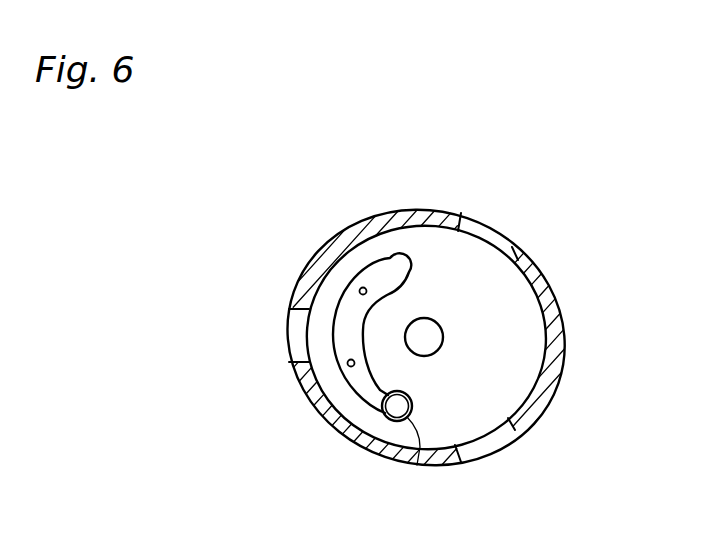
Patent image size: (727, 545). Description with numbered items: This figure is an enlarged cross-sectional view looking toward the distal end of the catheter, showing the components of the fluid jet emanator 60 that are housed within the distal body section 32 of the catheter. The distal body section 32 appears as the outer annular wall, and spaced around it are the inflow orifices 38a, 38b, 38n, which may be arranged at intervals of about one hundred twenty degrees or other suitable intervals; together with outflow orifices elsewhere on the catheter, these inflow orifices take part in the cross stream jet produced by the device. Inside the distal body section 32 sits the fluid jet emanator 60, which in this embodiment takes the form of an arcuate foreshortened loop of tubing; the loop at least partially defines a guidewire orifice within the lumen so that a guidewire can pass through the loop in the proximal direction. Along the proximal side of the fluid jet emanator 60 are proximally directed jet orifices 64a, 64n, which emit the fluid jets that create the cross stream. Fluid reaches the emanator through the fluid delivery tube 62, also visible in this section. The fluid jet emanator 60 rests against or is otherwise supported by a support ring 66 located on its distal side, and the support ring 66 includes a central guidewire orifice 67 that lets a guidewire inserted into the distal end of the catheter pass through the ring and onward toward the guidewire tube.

The distal body section 32 is at (395, 212).
The inflow orifice 38a is at (490, 233).
The inflow orifice 38b is at (497, 437).
The inflow orifice 38n is at (297, 329).
The support ring 66 is at (510, 321).
The guidewire orifice 67 is at (443, 348).
The proximally directed jet orifice 64a is at (362, 290).
The proximally directed jet orifice 64n is at (349, 366).
The fluid jet emanator 60 is at (316, 412).
The fluid delivery tube 62 is at (415, 463).